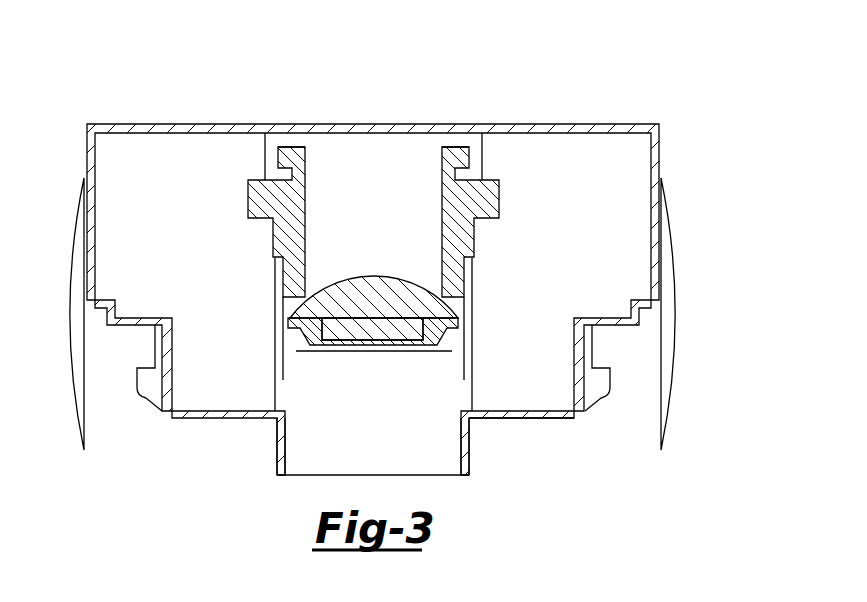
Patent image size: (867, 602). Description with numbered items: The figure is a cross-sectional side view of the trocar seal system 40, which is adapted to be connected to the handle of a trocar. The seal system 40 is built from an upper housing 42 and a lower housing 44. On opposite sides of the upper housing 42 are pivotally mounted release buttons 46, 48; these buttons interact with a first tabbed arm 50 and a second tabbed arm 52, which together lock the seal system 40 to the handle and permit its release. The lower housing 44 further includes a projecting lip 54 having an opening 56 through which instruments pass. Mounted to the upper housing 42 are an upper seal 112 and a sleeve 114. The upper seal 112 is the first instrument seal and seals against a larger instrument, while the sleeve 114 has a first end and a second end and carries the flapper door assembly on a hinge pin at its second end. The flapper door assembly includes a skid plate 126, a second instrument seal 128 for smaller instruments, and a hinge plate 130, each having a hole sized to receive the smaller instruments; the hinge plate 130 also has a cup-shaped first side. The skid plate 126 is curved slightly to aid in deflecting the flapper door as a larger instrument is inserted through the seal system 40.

The trocar seal system 40 is at (378, 118).
The upper housing 42 is at (580, 126).
The lower housing 44 is at (580, 420).
The release button 46 is at (673, 263).
The release button 48 is at (72, 344).
The first tabbed arm 50 is at (600, 392).
The second tabbed arm 52 is at (152, 398).
The projecting lip 54 is at (280, 457).
The opening 56 is at (460, 462).
The upper seal 112 is at (470, 160).
The sleeve 114 is at (238, 186).
The skid plate 126 is at (347, 272).
The second instrument seal 128 is at (290, 333).
The hinge plate 130 is at (298, 351).